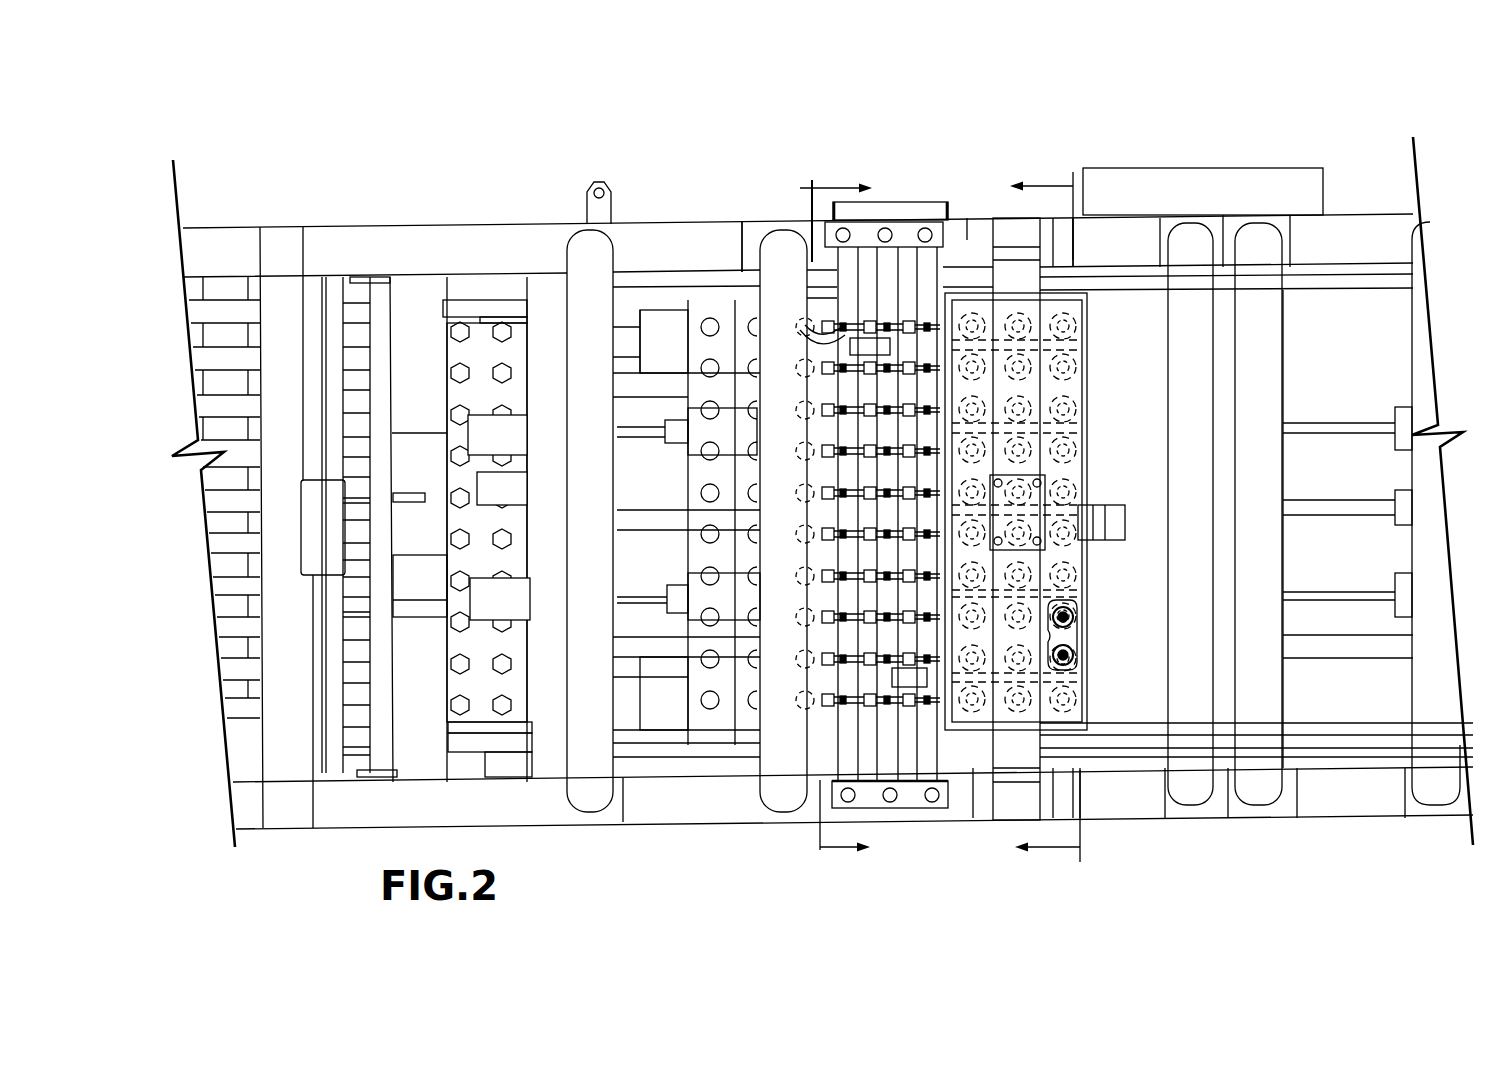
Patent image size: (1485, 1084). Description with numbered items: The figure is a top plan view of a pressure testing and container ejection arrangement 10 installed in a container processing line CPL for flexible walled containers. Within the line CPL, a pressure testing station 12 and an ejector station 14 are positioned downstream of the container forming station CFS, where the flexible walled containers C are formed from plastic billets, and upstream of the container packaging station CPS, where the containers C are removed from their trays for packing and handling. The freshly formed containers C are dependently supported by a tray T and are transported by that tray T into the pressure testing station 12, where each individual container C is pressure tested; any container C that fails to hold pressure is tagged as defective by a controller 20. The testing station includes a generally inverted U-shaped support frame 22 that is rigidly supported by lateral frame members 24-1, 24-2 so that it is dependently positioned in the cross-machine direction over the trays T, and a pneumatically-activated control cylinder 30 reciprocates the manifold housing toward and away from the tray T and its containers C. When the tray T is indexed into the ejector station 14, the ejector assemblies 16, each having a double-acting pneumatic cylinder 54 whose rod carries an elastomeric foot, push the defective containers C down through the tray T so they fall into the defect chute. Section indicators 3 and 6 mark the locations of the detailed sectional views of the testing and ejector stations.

The cable processing assembly 10 is at (1077, 83).
The pressure testing station 12 is at (1000, 200).
The ejector station 14 is at (930, 185).
The ejector assemblies 16 is at (835, 440).
The controller 20 is at (1203, 205).
The support frame 22 is at (1023, 482).
The lateral frame member 24-1 is at (1160, 808).
The lateral frame member 24-2 is at (1152, 255).
The control cylinder 30 is at (1027, 512).
The double-acting pneumatic cylinder 54 is at (878, 385).
The section line 3 is at (1045, 517).
The section line 6 is at (841, 525).
The flexible walled container C is at (1078, 623).
The tray T is at (1068, 633).
The container packaging station CPS is at (530, 180).
The container processing line CPL is at (1215, 98).
The container forming station CFS is at (1390, 147).